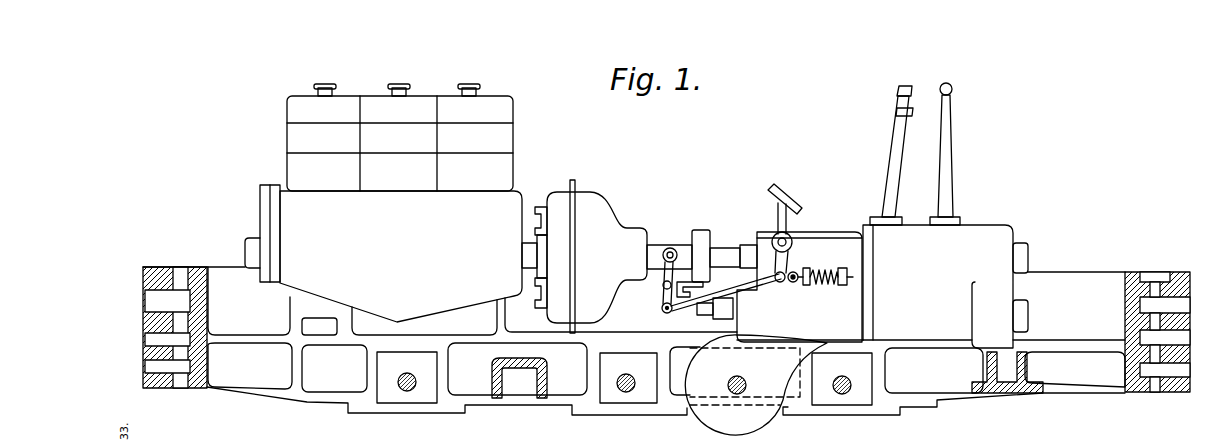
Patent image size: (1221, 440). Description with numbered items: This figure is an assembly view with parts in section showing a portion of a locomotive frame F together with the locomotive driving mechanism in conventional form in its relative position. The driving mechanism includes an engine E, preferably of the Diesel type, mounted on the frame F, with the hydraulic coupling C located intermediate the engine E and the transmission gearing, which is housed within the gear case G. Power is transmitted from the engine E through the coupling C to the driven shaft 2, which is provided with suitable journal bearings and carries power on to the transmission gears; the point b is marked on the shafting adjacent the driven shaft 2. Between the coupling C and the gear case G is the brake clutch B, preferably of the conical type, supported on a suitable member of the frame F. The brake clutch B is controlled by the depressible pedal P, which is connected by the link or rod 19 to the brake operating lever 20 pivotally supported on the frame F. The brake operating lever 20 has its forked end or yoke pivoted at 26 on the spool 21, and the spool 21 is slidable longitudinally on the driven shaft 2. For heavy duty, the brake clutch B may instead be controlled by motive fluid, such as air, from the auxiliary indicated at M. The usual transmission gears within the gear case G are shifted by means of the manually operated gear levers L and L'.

The engine E is at (391, 203).
The hydraulic coupling C is at (591, 247).
The brake clutch B is at (664, 256).
The spool 21 is at (665, 264).
The pivot 26 is at (660, 247).
The shaft b is at (727, 246).
The driven shaft 2 is at (688, 260).
The brake operating lever 20 is at (661, 308).
The auxiliary M is at (705, 310).
The link or rod 19 is at (778, 284).
The depressible pedal P is at (780, 186).
The gear lever L is at (880, 150).
The gear lever L' is at (961, 150).
The gear case G is at (945, 282).
The locomotive frame F is at (667, 397).